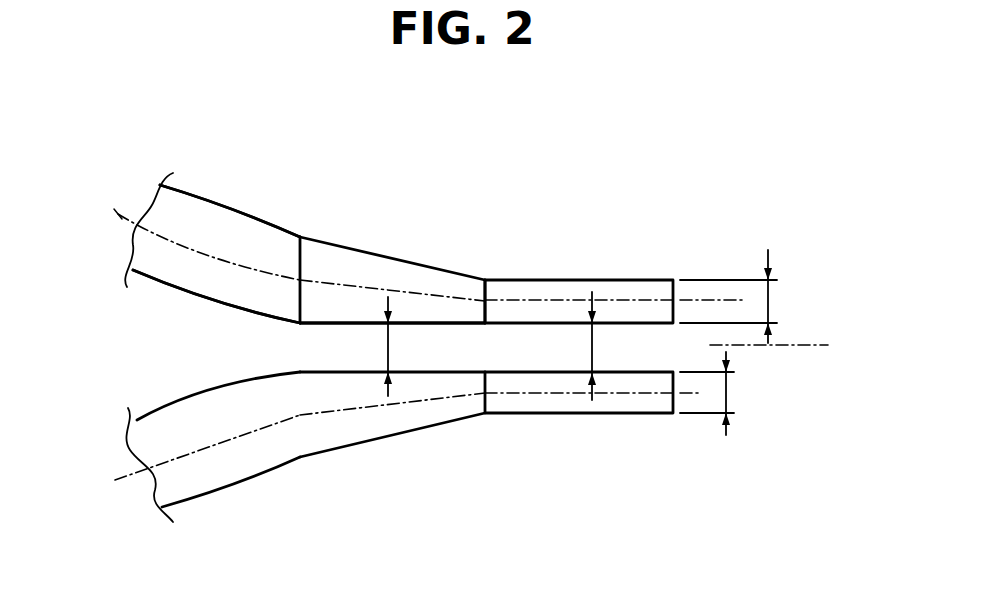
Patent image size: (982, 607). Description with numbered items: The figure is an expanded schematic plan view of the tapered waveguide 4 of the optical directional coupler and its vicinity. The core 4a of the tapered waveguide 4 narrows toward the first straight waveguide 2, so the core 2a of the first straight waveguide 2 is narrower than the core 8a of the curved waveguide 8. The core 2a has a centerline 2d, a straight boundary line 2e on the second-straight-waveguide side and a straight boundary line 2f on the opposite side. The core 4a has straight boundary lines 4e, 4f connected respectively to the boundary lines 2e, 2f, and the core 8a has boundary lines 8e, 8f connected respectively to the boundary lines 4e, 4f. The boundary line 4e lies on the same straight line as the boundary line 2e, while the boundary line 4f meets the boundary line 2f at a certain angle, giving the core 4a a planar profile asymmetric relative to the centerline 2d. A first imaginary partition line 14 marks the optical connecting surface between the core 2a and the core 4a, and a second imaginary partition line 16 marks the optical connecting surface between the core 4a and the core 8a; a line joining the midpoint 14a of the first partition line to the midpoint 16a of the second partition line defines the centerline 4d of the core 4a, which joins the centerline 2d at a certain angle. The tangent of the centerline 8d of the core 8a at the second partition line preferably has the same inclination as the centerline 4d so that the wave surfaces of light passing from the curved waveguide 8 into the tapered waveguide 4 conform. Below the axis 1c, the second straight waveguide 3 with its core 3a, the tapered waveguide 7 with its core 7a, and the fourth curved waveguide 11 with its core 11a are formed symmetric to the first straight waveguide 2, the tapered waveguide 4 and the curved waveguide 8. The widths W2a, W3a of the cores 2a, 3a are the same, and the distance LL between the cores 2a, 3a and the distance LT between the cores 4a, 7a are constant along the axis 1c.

The axis 1c is at (828, 345).
The first straight waveguide 2 is at (539, 263).
The core of the first straight waveguide 2a is at (568, 290).
The centerline of the core of the first straight waveguide 2d is at (710, 300).
The boundary line on the second-straight-waveguide side 2e is at (627, 325).
The boundary line on the first-straight-waveguide side 2f is at (633, 280).
The second straight waveguide 3 is at (561, 427).
The core of the second straight waveguide 3a is at (519, 402).
The tapered waveguide 4 is at (405, 229).
The core of the tapered waveguide 4a is at (365, 268).
The centerline of the core of the tapered waveguide 4d is at (330, 286).
The boundary line of the tapered waveguide 4e is at (408, 324).
The boundary line of the tapered waveguide 4f is at (444, 268).
The tapered waveguide 7 is at (380, 456).
The core of the tapered waveguide 7a is at (335, 425).
The first curved waveguide 8 is at (224, 196).
The core of the curved waveguide 8a is at (183, 220).
The centerline of the core of the curved waveguide 8d is at (122, 218).
The boundary line of the curved waveguide 8e is at (183, 295).
The boundary line of the curved waveguide 8f is at (247, 222).
The fourth curved waveguide 11 is at (268, 483).
The core of the fourth curved waveguide 11a is at (197, 460).
The first imaginary partition line 14 is at (487, 292).
The midpoint of the first partition line 14a is at (488, 303).
The second imaginary partition line 16 is at (299, 253).
The midpoint of the second partition line 16a is at (297, 279).
The distance between the tapered waveguide cores LT is at (390, 353).
The distance between the straight waveguide cores LL is at (593, 352).
The width of the core of the first straight waveguide W2a is at (799, 296).
The width of the core of the second straight waveguide W3a is at (758, 393).